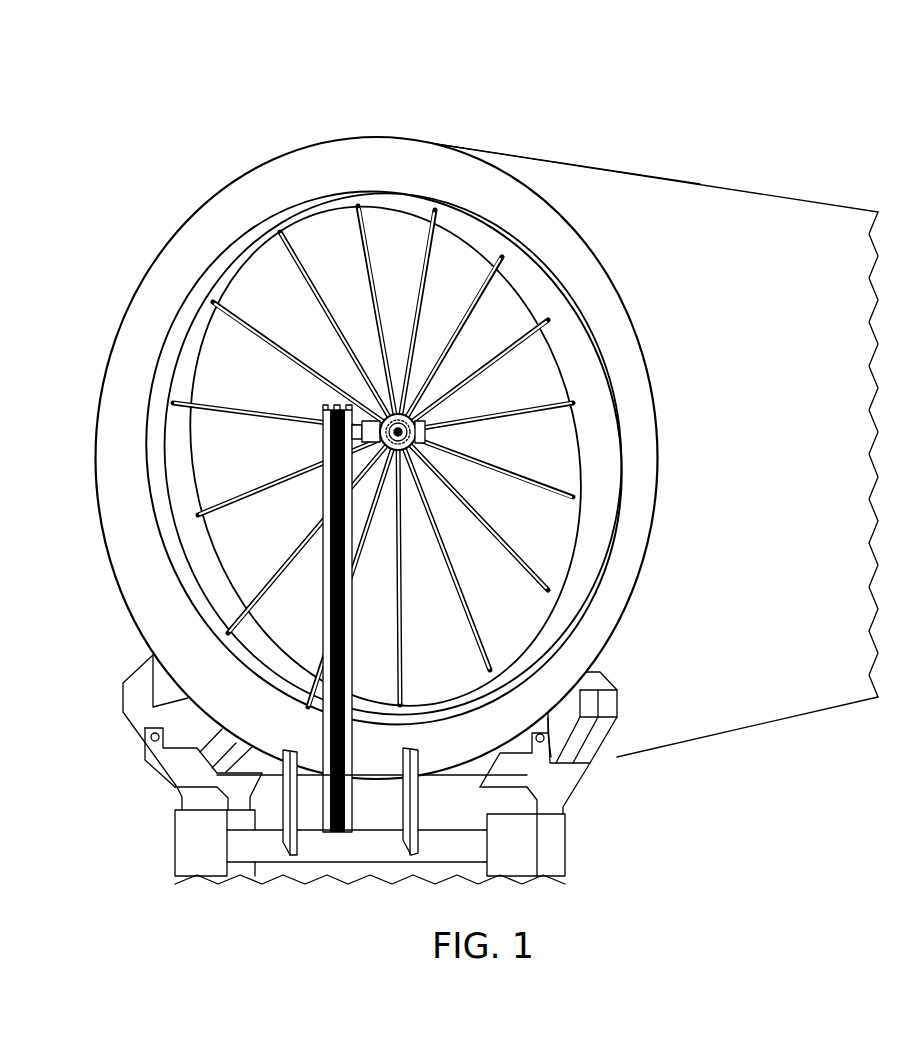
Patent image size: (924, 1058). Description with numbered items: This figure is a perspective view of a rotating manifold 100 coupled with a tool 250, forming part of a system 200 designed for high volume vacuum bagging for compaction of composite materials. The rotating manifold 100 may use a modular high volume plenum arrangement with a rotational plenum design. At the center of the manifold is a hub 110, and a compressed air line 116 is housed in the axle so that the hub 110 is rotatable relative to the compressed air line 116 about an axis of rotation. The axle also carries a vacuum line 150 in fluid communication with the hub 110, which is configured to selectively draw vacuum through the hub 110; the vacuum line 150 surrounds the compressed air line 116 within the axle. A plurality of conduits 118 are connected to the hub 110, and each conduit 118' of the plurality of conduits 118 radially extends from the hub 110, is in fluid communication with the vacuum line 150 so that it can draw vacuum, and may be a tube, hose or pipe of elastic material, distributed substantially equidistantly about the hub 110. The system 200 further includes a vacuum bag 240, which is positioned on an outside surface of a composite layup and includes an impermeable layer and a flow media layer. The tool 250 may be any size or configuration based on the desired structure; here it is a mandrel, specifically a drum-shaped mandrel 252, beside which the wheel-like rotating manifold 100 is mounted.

The rotating manifold 100 is at (440, 408).
The hub 110 is at (422, 448).
The compressed air line 116 is at (348, 458).
The plurality of conduits 118 is at (295, 323).
The conduit 118' is at (339, 332).
The vacuum line 150 is at (367, 420).
The system 200 is at (449, 133).
The vacuum bag 240 is at (617, 182).
The tool 250 is at (738, 168).
The drum-shaped mandrel 252 is at (866, 132).